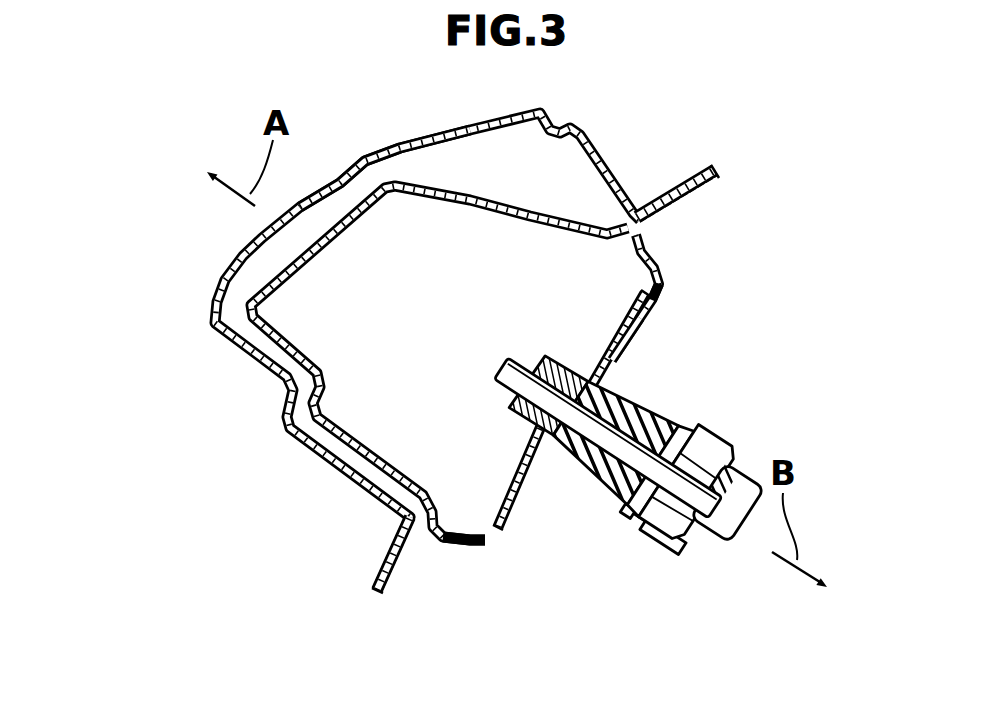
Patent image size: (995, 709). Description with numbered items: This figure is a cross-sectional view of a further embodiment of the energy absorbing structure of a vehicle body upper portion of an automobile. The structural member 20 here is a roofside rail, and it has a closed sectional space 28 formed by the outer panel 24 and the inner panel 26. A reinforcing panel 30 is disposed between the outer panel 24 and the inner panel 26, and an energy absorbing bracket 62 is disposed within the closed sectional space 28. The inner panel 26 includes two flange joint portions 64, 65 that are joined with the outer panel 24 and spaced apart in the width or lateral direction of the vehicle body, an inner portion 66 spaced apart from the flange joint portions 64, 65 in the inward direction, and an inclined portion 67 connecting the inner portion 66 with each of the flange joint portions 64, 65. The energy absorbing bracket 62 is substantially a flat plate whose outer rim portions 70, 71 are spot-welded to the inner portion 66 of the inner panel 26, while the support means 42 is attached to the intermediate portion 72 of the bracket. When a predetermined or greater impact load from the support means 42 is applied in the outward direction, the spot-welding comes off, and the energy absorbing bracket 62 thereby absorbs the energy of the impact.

The structural member 20 is at (362, 154).
The outer panel 24 is at (242, 261).
The inner panel 26 is at (490, 557).
The closed sectional space 28 is at (560, 250).
The reinforcing panel 30 is at (533, 207).
The support means 42 is at (623, 513).
The energy absorbing bracket 62 is at (580, 455).
The flange joint portion 64 is at (403, 573).
The flange joint portion 65 is at (693, 207).
The inner portion 66 is at (637, 357).
The inclined portion 67 is at (657, 267).
The outer rim portion 70 is at (531, 490).
The outer rim portion 71 is at (650, 313).
The intermediate portion 72 is at (620, 397).